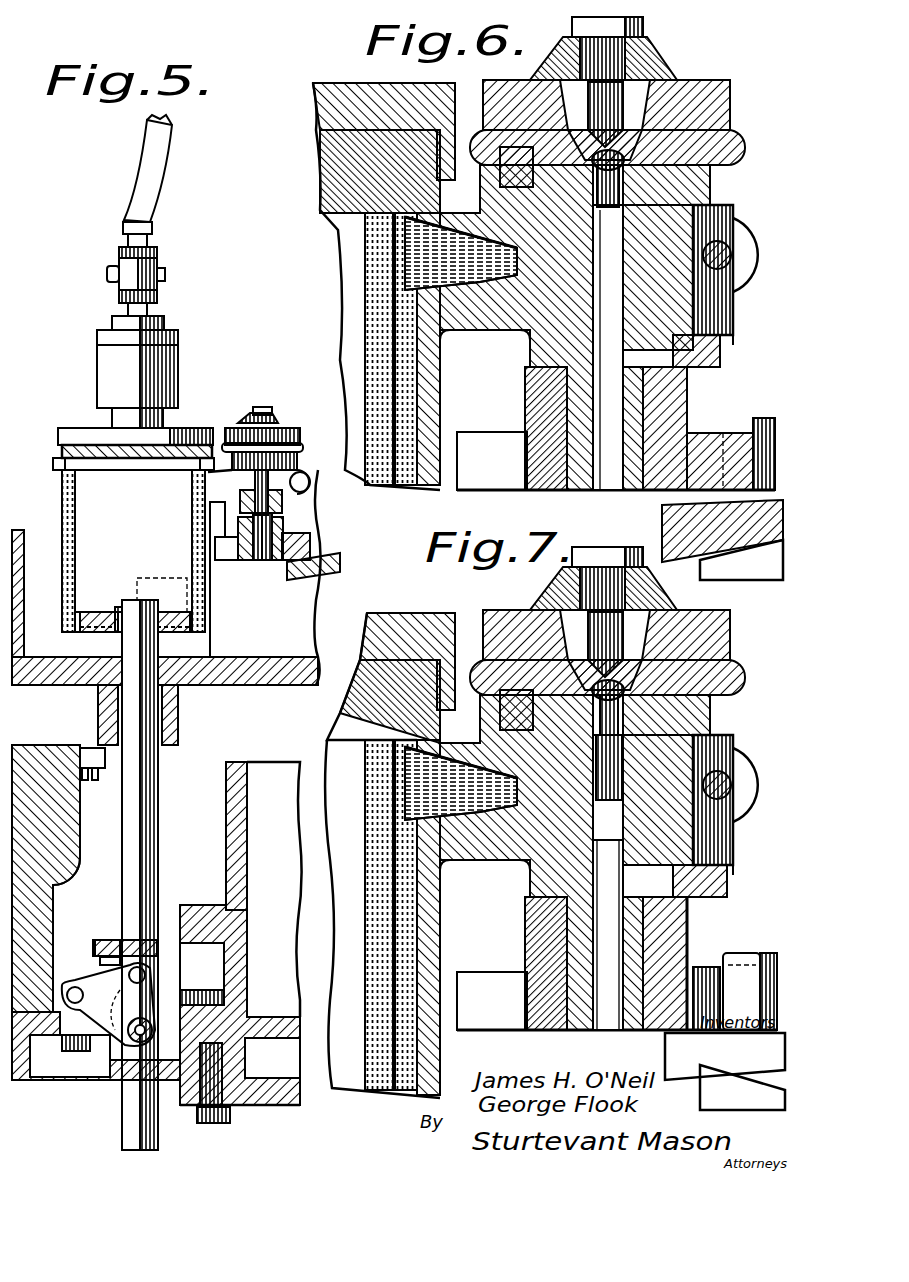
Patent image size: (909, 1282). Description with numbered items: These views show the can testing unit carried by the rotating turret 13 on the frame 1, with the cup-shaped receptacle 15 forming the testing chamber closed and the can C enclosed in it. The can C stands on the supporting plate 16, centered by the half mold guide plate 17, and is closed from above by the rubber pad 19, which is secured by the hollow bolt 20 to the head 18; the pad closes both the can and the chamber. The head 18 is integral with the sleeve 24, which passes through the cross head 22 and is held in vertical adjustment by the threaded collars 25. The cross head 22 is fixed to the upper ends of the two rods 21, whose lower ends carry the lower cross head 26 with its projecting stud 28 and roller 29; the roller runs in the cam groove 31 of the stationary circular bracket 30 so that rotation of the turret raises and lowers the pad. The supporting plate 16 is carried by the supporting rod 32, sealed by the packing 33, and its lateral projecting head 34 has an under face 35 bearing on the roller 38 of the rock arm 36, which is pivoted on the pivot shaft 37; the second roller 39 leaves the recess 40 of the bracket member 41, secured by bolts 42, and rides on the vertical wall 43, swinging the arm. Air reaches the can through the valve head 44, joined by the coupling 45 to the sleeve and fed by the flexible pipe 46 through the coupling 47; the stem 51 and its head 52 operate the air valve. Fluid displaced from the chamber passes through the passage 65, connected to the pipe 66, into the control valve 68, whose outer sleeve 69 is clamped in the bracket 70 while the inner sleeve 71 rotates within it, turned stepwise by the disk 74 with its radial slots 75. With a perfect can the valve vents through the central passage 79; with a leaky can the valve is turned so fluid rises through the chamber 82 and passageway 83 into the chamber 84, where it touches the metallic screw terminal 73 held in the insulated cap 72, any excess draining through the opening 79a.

In FIG. 5, the frame 1 is at (272, 1105).
In FIG. 5, the rotating turret 13 is at (288, 637).
In FIG. 5, the cup-shaped receptacle 15 is at (70, 578).
In FIG. 5, the supporting plate 16 is at (100, 610).
In FIG. 5, the half mold guide plate 17 is at (180, 585).
In FIG. 5, the head 18 is at (80, 430).
In FIG. 6, the head 18 is at (330, 95).
In FIG. 7, the head 18 is at (407, 661).
In FIG. 5, the rubber pad 19 is at (85, 470).
In FIG. 6, the rubber pad 19 is at (325, 165).
In FIG. 7, the rubber pad 19 is at (382, 855).
In FIG. 5, the hollow bolt 20 is at (140, 475).
In FIG. 5, the rods 21 is at (148, 1140).
In FIG. 5, the cross head 22 is at (178, 362).
In FIG. 5, the sleeve 24 is at (164, 322).
In FIG. 5, the threaded collars 25 is at (178, 338).
In FIG. 5, the lower cross head 26 is at (205, 1030).
In FIG. 5, the projecting stud 28 is at (238, 930).
In FIG. 5, the roller 29 is at (235, 950).
In FIG. 5, the circular bracket 30 is at (236, 805).
In FIG. 5, the cam groove 31 is at (200, 1000).
In FIG. 5, the supporting rod 32 is at (150, 775).
In FIG. 5, the packing 33 is at (178, 715).
In FIG. 5, the lateral projecting head 34 is at (120, 930).
In FIG. 5, the under face 35 is at (112, 950).
In FIG. 5, the rock arm 36 is at (108, 1004).
In FIG. 5, the pivot shaft 37 is at (130, 1040).
In FIG. 5, the roller 38 is at (130, 945).
In FIG. 5, the roller 39 is at (95, 945).
In FIG. 5, the recess 40 is at (68, 848).
In FIG. 5, the bracket member 41 is at (40, 915).
In FIG. 5, the bolts 42 is at (68, 1050).
In FIG. 5, the vertical wall 43 is at (56, 935).
In FIG. 5, the valve head 44 is at (138, 272).
In FIG. 5, the coupling 45 is at (148, 310).
In FIG. 5, the flexible pipe 46 is at (135, 170).
In FIG. 5, the coupling 47 is at (150, 245).
In FIG. 5, the stem 51 is at (118, 266).
In FIG. 5, the head 52 is at (107, 273).
In FIG. 5, the passage 65 is at (218, 470).
In FIG. 6, the passage 65 is at (465, 245).
In FIG. 7, the passage 65 is at (465, 775).
In FIG. 6, the pipe 66 is at (425, 398).
In FIG. 7, the pipe 66 is at (425, 910).
In FIG. 5, the control valve 68 is at (302, 448).
In FIG. 6, the control valve 68 is at (732, 100).
In FIG. 7, the control valve 68 is at (732, 630).
In FIG. 5, the outer sleeve 69 is at (306, 476).
In FIG. 6, the outer sleeve 69 is at (700, 240).
In FIG. 7, the outer sleeve 69 is at (717, 785).
In FIG. 5, the bracket 70 is at (300, 490).
In FIG. 6, the bracket 70 is at (470, 325).
In FIG. 7, the bracket 70 is at (720, 735).
In FIG. 5, the inner sleeve 71 is at (290, 512).
In FIG. 6, the inner sleeve 71 is at (722, 352).
In FIG. 7, the inner sleeve 71 is at (700, 730).
In FIG. 5, the cap 72 is at (270, 418).
In FIG. 6, the cap 72 is at (655, 60).
In FIG. 7, the cap 72 is at (655, 590).
In FIG. 5, the metallic screw terminal 73 is at (268, 407).
In FIG. 6, the metallic screw terminal 73 is at (643, 27).
In FIG. 7, the metallic screw terminal 73 is at (620, 547).
In FIG. 5, the disk 74 is at (280, 565).
In FIG. 6, the disk 74 is at (680, 388).
In FIG. 7, the disk 74 is at (680, 945).
In FIG. 5, the radial slots 75 is at (228, 548).
In FIG. 6, the radial slots 75 is at (492, 461).
In FIG. 7, the radial slots 75 is at (665, 1030).
In FIG. 5, the central passage 79 is at (285, 530).
In FIG. 6, the central passage 79 is at (615, 420).
In FIG. 7, the central passage 79 is at (615, 920).
In FIG. 7, the opening 79a is at (525, 905).
In FIG. 6, the chamber 82 is at (620, 180).
In FIG. 7, the chamber 82 is at (625, 800).
In FIG. 6, the passageway 83 is at (640, 140).
In FIG. 7, the passageway 83 is at (640, 670).
In FIG. 6, the chamber 84 is at (625, 100).
In FIG. 7, the chamber 84 is at (625, 640).
In FIG. 6, the can C is at (365, 245).
In FIG. 7, the can C is at (395, 878).